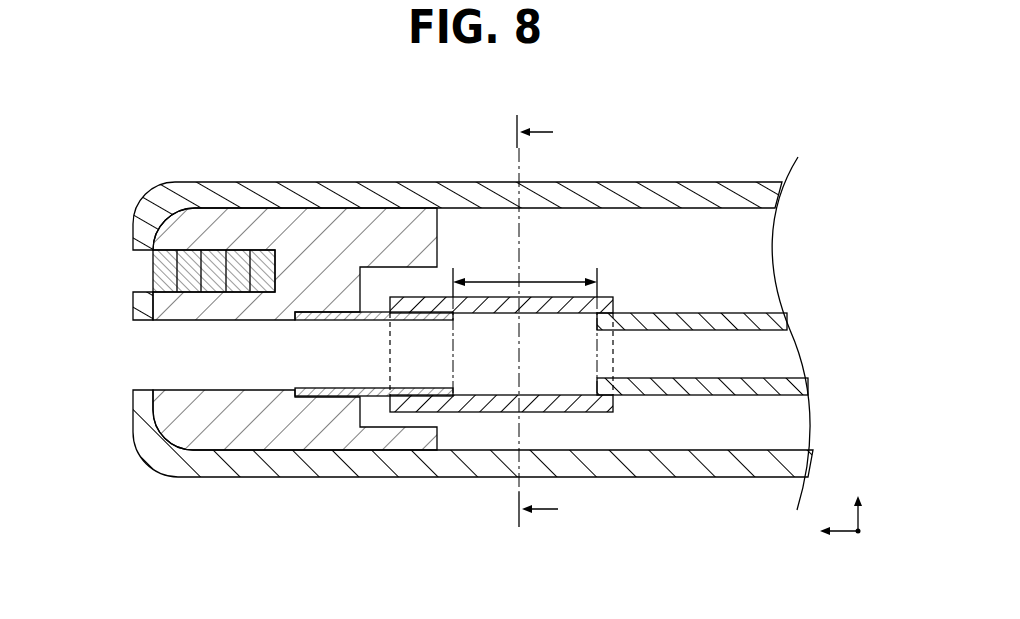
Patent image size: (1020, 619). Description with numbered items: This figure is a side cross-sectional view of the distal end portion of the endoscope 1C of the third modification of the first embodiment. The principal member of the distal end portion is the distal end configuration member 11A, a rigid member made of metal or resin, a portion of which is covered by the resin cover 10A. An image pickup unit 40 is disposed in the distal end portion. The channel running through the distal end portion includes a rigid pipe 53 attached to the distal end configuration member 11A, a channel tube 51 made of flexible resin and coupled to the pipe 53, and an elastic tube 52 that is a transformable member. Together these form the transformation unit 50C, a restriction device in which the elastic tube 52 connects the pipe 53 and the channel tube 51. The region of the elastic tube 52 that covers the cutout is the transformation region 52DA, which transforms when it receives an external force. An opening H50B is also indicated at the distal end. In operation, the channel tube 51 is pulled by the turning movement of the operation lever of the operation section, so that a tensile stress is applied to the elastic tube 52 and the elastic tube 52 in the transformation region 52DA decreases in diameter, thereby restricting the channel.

The endoscope 1C is at (121, 136).
The resin cover 10A is at (707, 182).
The distal end configuration member 11A is at (272, 207).
The image pickup unit 40 is at (228, 250).
The opening H50B is at (138, 353).
The transformation unit 50C is at (551, 438).
The channel tube 51 is at (702, 420).
The elastic tube 52 is at (483, 412).
The transformation region 52DA is at (525, 275).
The pipe 53 is at (350, 397).